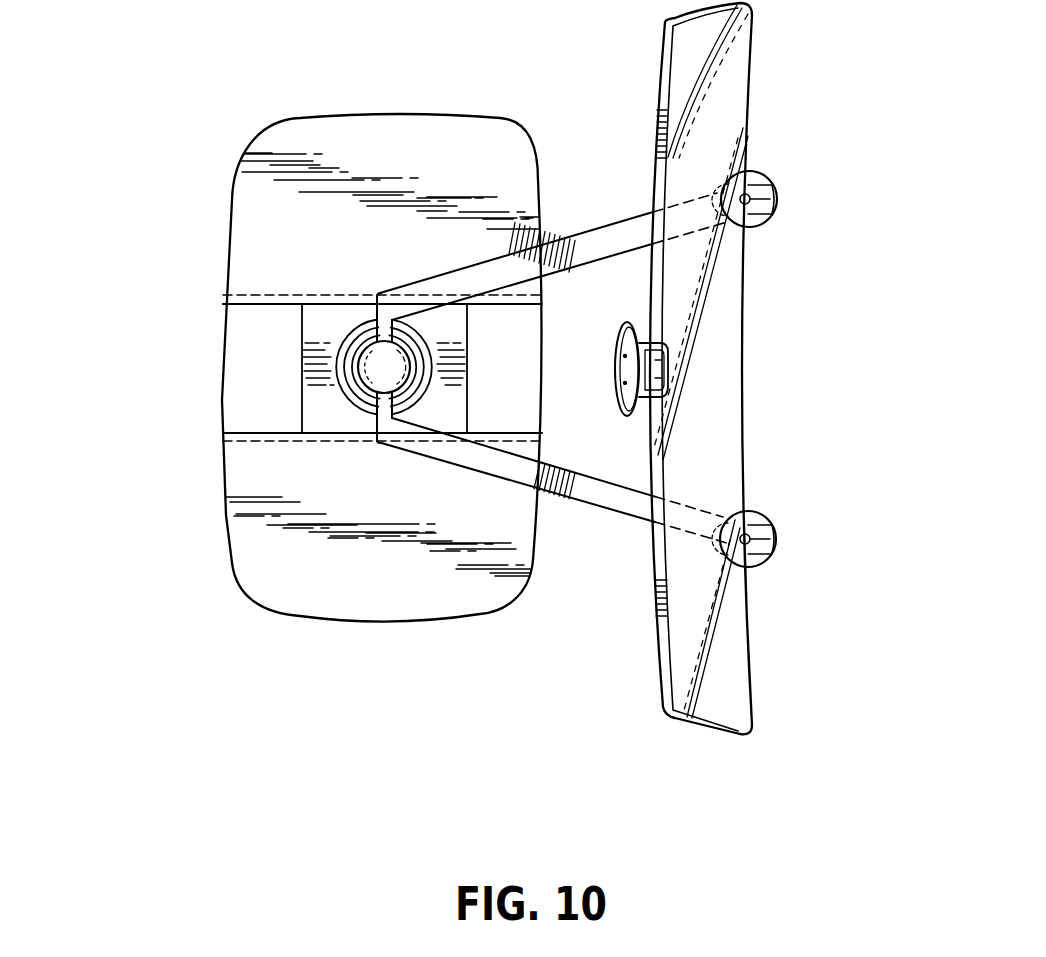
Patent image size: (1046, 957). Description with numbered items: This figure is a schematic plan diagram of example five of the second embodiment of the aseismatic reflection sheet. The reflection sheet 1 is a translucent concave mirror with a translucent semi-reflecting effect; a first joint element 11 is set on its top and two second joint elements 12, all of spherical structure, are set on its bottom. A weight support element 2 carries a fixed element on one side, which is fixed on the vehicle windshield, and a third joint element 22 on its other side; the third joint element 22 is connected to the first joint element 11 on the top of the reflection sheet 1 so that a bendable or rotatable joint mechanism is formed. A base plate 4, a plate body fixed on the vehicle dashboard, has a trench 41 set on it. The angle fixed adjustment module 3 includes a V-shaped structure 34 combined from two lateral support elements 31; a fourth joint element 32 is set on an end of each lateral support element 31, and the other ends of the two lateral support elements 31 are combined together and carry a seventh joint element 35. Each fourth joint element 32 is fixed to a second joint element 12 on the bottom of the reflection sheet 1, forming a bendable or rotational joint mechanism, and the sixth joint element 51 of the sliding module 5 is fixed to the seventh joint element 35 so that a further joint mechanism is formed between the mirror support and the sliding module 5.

The reflection sheet 1 is at (734, 95).
The first joint element 11 is at (663, 362).
The second joint element 12 is at (779, 206).
The weight support element 2 is at (613, 347).
The third joint element 22 is at (641, 341).
The angle fixed adjustment module 3 is at (516, 363).
The lateral support element 31 is at (485, 285).
The fourth joint element 32 is at (772, 225).
The V-shaped structure 34 is at (562, 497).
The seventh joint element 35 is at (373, 372).
The base plate 4 is at (235, 517).
The trench 41 is at (245, 406).
The sliding module 5 is at (337, 318).
The sixth joint element 51 is at (353, 352).